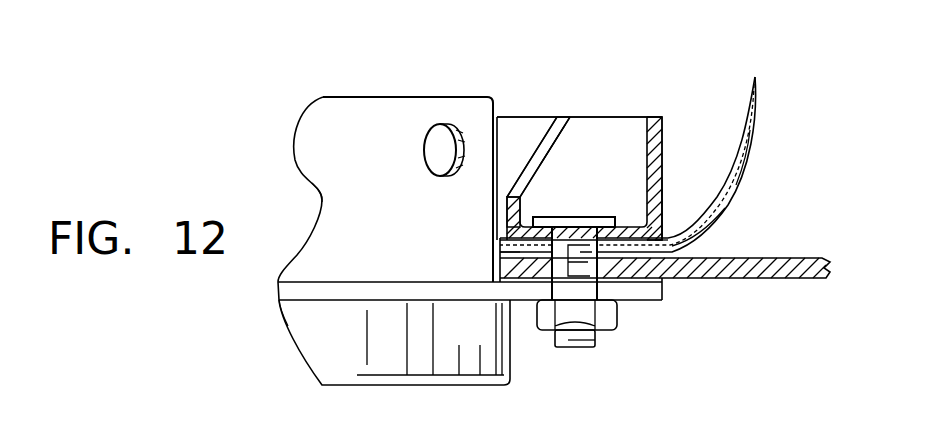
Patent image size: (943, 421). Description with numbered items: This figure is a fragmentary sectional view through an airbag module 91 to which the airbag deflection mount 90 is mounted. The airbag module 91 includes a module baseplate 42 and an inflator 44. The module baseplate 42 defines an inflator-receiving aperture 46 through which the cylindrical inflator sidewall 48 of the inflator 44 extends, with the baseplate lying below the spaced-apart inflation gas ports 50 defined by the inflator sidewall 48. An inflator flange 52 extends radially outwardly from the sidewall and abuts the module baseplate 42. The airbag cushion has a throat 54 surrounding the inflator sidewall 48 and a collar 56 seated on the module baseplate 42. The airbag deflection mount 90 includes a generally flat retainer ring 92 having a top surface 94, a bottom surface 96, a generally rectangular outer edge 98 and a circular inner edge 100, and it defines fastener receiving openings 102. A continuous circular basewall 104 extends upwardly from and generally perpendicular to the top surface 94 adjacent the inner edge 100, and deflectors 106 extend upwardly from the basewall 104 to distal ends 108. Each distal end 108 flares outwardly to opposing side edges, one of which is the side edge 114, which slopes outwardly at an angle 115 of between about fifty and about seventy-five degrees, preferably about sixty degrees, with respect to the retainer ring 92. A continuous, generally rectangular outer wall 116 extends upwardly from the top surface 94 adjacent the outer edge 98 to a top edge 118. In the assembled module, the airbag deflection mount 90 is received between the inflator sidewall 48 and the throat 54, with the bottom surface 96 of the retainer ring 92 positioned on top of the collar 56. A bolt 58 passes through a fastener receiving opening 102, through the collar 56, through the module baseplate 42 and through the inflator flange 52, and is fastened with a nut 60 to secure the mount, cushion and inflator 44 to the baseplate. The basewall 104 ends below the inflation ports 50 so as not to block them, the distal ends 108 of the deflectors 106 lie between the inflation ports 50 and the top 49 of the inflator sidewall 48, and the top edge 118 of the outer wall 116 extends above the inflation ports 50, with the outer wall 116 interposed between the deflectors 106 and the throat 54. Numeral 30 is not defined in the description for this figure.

The strip 30 is at (758, 93).
The module baseplate 42 is at (795, 280).
The inflator 44 is at (343, 96).
The inflator-receiving aperture 46 is at (500, 278).
The inflator sidewall 48 is at (322, 197).
The top of the inflator sidewall 49 is at (492, 96).
The inflation gas ports 50 is at (427, 162).
The inflator flange 52 is at (305, 303).
The throat 54 is at (750, 147).
The collar 56 is at (713, 247).
The bolts 58 is at (570, 348).
The nuts 60 is at (600, 328).
The airbag deflection mount 90 is at (665, 165).
The airbag module 91 is at (645, 63).
The retainer ring 92 is at (603, 232).
The top surface 94 is at (610, 222).
The bottom surface 96 is at (521, 258).
The outer edge 98 is at (657, 247).
The inner edge 100 is at (518, 292).
The fastener receiving openings 102 is at (600, 228).
The basewall 104 is at (507, 207).
The deflectors 106 is at (520, 160).
The distal ends 108 is at (524, 163).
The side edge 114 is at (607, 219).
The angle 115 is at (557, 158).
The outer wall 116 is at (660, 202).
The top edge 118 is at (654, 117).